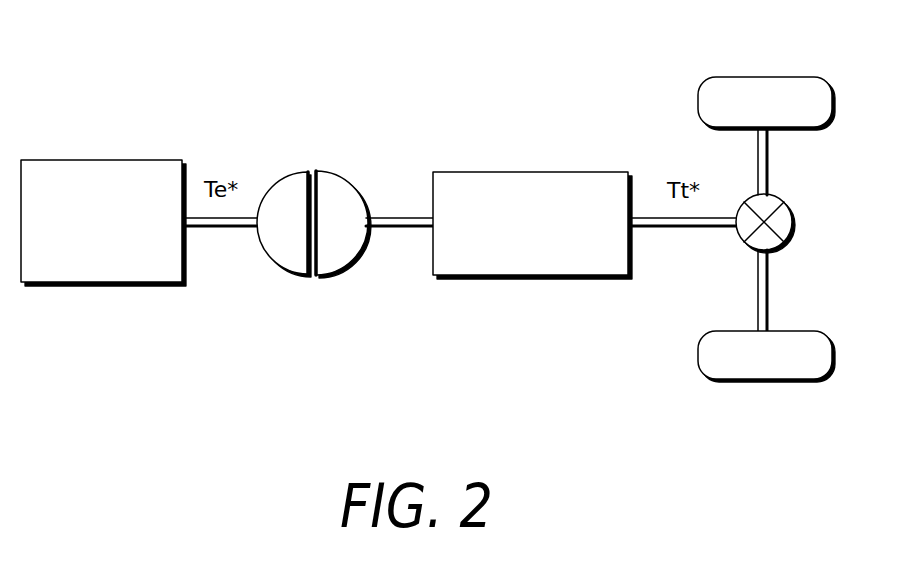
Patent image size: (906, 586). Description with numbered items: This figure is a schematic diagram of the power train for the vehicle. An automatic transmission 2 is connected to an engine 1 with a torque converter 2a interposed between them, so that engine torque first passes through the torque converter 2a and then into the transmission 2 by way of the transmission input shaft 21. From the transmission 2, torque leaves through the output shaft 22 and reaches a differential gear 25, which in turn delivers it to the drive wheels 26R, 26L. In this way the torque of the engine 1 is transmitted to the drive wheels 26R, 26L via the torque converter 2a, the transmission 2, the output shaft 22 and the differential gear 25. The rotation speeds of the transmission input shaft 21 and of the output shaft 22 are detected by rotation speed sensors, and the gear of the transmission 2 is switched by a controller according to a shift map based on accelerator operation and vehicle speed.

The engine 1 is at (60, 162).
The torque converter 2a is at (292, 297).
The transmission input shaft 21 is at (394, 229).
The automatic transmission 2 is at (538, 268).
The output shaft 22 is at (674, 228).
The differential gear 25 is at (792, 225).
The drive wheel 26R is at (764, 77).
The drive wheel 26L is at (765, 371).